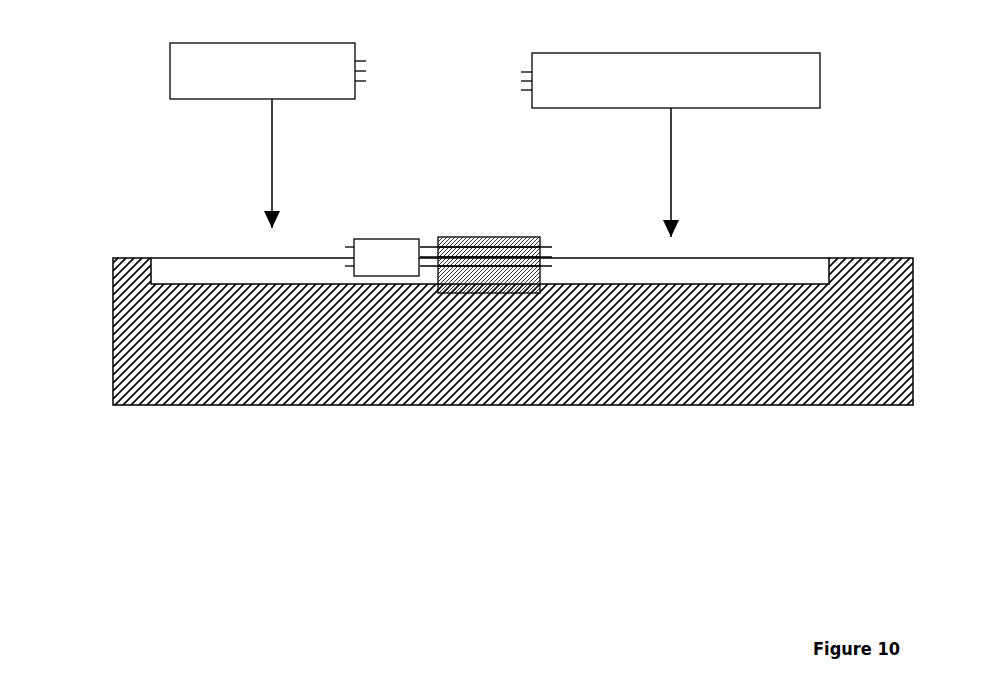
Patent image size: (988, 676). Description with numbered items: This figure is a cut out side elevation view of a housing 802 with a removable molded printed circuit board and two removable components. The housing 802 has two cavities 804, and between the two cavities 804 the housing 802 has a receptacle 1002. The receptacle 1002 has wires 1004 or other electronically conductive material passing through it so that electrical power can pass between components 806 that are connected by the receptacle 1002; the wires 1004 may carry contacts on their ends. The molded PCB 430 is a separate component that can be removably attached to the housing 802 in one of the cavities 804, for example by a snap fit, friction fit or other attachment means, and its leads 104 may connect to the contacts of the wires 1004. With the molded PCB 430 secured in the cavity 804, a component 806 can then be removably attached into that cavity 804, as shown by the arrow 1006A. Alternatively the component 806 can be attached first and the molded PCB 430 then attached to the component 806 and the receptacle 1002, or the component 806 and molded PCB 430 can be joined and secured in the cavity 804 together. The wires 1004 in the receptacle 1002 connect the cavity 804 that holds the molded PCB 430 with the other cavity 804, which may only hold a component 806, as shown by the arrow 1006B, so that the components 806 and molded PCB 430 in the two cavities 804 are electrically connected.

The housing 802 is at (215, 380).
The cavity 804 is at (187, 274).
The component 806 is at (242, 72).
The arrow 1006A is at (270, 155).
The arrow 1006B is at (675, 154).
The leads 104 is at (347, 245).
The molded PCB 430 is at (383, 247).
The receptacle 1002 is at (522, 237).
The wires 1004 is at (495, 253).